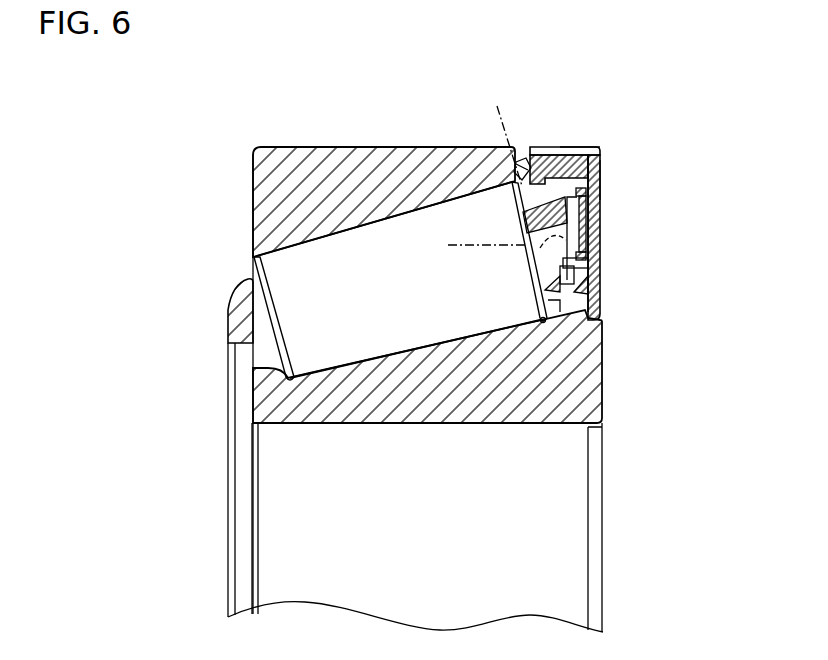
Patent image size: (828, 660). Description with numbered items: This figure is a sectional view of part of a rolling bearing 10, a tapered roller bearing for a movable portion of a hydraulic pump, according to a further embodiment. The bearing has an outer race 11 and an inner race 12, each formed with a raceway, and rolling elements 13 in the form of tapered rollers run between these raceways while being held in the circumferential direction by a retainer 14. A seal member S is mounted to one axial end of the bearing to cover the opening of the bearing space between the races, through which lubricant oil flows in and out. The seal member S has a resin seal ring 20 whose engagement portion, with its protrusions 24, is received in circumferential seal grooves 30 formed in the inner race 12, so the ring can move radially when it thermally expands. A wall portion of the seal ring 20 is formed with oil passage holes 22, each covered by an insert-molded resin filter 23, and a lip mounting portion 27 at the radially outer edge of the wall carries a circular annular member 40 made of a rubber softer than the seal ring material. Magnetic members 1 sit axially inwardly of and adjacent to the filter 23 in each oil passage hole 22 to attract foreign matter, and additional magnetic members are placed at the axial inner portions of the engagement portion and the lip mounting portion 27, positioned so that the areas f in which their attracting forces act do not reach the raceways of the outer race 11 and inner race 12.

The rolling bearing 10 is at (362, 140).
The outer race 11 is at (322, 192).
The inner race 12 is at (330, 407).
The rolling elements 13 is at (323, 277).
The retainer 14 is at (247, 302).
The magnetic members 1 is at (520, 231).
The area in which attracting forces are applied f is at (481, 169).
The circular annular member 40 is at (553, 150).
The lip mounting portion 27 is at (580, 144).
The seal member S is at (605, 182).
The oil passage holes 22 is at (595, 207).
The seal ring 20 is at (617, 227).
The filters 23 is at (593, 233).
The seal grooves 30 is at (600, 308).
The protrusions 24 is at (560, 292).